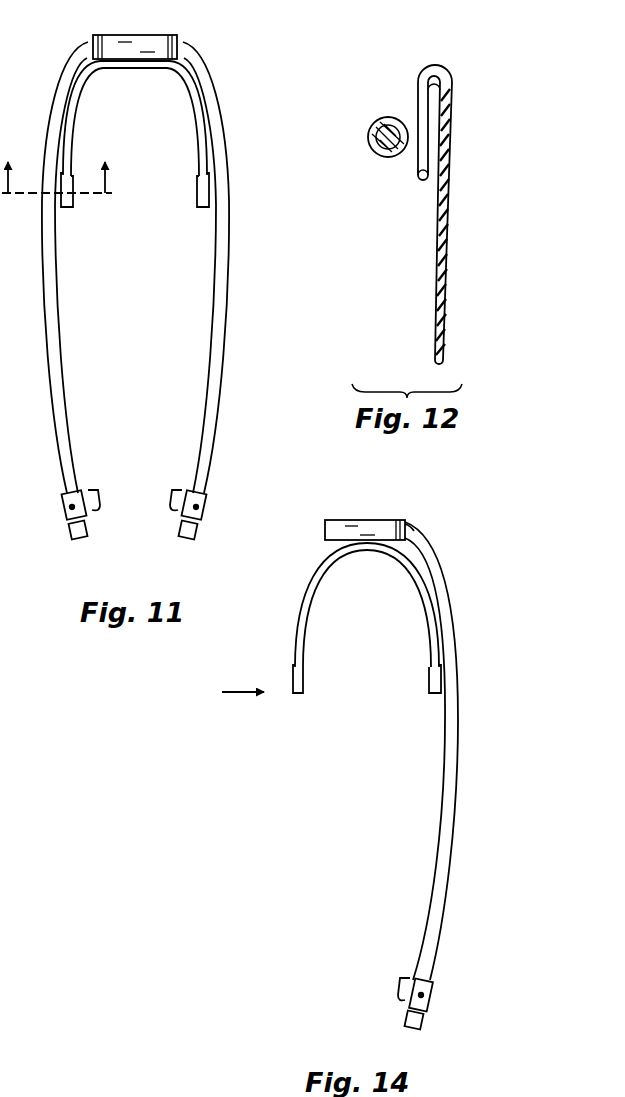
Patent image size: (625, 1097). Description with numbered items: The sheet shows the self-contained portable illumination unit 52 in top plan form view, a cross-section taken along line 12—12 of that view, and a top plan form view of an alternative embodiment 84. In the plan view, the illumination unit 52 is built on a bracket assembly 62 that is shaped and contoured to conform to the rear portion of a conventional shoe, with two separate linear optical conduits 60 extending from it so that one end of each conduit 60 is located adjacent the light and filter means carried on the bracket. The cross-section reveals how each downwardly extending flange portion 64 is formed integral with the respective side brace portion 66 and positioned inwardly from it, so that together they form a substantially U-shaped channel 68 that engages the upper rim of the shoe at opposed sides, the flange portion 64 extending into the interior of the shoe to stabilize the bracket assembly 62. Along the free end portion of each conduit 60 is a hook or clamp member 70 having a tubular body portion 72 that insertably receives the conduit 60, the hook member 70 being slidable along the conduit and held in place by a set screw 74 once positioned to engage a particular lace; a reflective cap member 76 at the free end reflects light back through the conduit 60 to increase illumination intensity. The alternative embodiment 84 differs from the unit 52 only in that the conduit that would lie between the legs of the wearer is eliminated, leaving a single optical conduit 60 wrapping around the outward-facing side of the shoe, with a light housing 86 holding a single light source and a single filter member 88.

In FIG. 11, the section line 12— 12 is at (75, 187).
In FIG. 11, the illumination unit 52 is at (233, 68).
In FIG. 11, the linear optical conduit 60 is at (56, 367).
In FIG. 12, the linear optical conduit 60 is at (368, 125).
In FIG. 14, the linear optical conduit 60 is at (443, 782).
In FIG. 11, the bracket assembly 62 is at (171, 90).
In FIG. 14, the bracket assembly 62 is at (335, 567).
In FIG. 12, the flange portion 64 is at (445, 321).
In FIG. 12, the side brace portion 66 is at (420, 171).
In FIG. 12, the U-shaped channel 68 is at (433, 166).
In FIG. 11, the hook or clamp member 70 is at (168, 492).
In FIG. 14, the hook or clamp member 70 is at (394, 982).
In FIG. 11, the tubular body portion 72 is at (64, 498).
In FIG. 14, the tubular body portion 72 is at (436, 988).
In FIG. 11, the set screw 74 is at (70, 507).
In FIG. 14, the set screw 74 is at (430, 998).
In FIG. 11, the reflective cap member 76 is at (86, 533).
In FIG. 14, the reflective cap member 76 is at (405, 1024).
In FIG. 14, the illumination unit embodiment 84 is at (224, 691).
In FIG. 14, the light housing 86 is at (367, 520).
In FIG. 14, the filter member 88 is at (410, 528).